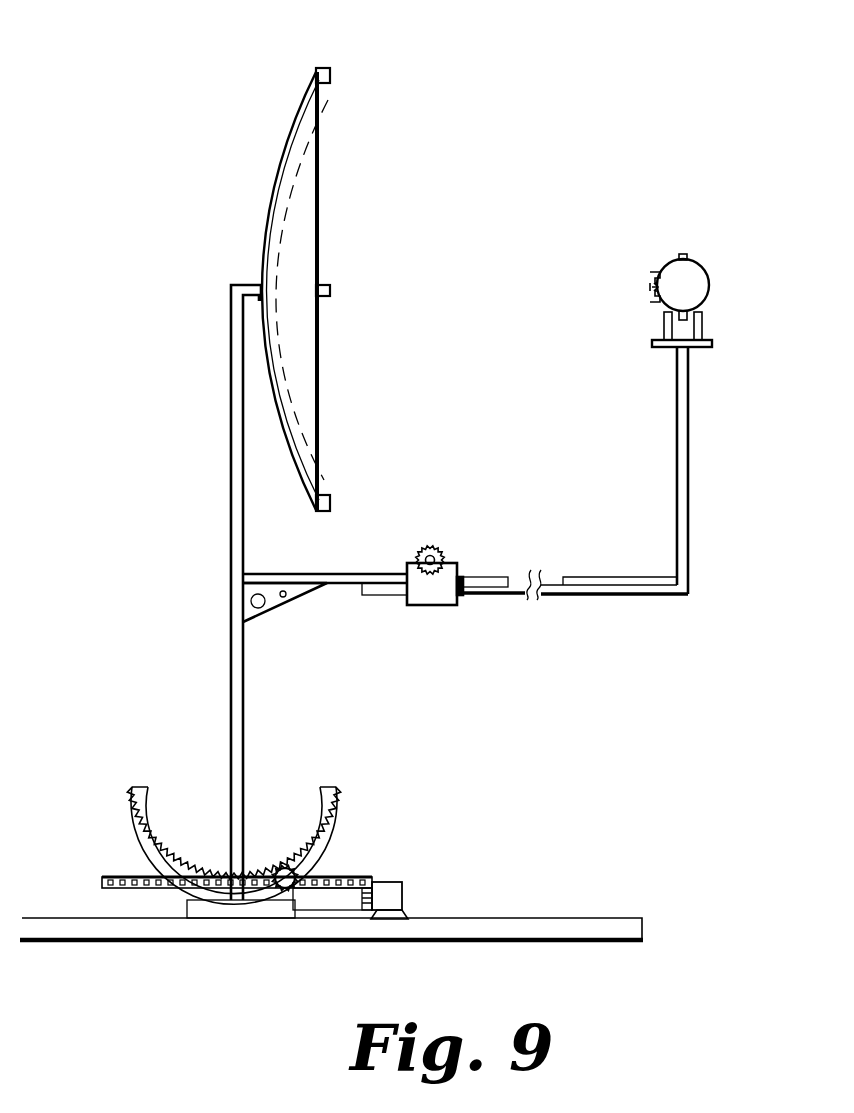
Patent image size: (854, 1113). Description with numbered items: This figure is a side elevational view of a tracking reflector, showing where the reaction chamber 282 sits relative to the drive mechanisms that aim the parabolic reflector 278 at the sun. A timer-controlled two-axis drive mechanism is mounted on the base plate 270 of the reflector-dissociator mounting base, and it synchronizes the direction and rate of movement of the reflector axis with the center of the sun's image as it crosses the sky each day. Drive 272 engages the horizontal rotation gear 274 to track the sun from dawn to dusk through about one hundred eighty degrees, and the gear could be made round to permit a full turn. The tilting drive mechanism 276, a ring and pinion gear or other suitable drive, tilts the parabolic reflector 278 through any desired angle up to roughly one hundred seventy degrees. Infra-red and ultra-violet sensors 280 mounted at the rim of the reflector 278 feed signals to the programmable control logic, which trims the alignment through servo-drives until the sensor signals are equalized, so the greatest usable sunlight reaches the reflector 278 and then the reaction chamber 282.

The base plate 270 is at (543, 917).
The drive 272 is at (396, 881).
The horizontal rotation gear 274 is at (342, 877).
The tilting drive mechanism 276 is at (296, 875).
The parabolic reflector 278 is at (268, 186).
The infra-red and ultra-violet sensors 280 is at (333, 78).
The reaction chamber 282 is at (701, 264).